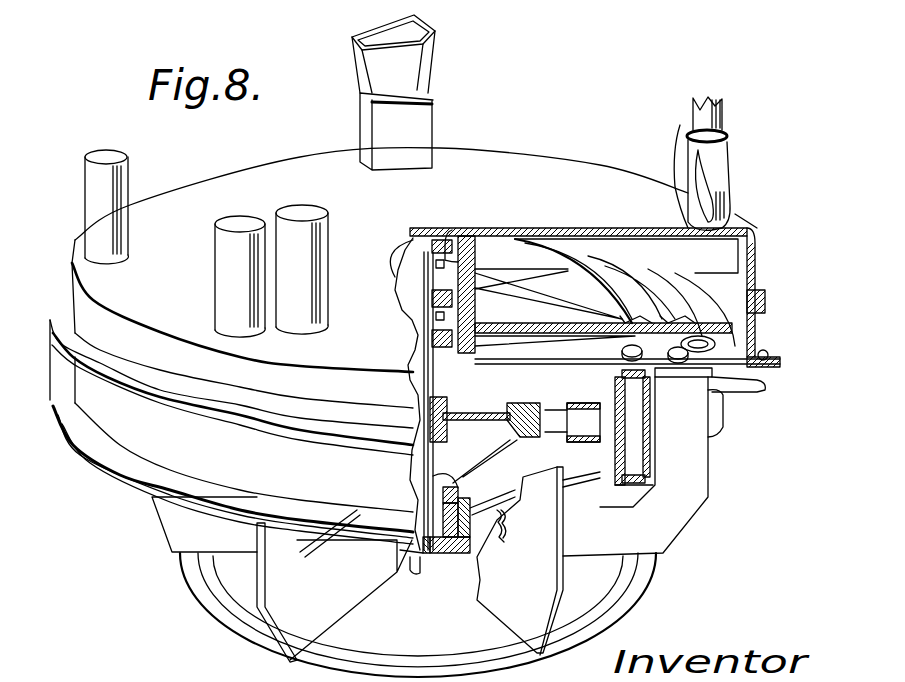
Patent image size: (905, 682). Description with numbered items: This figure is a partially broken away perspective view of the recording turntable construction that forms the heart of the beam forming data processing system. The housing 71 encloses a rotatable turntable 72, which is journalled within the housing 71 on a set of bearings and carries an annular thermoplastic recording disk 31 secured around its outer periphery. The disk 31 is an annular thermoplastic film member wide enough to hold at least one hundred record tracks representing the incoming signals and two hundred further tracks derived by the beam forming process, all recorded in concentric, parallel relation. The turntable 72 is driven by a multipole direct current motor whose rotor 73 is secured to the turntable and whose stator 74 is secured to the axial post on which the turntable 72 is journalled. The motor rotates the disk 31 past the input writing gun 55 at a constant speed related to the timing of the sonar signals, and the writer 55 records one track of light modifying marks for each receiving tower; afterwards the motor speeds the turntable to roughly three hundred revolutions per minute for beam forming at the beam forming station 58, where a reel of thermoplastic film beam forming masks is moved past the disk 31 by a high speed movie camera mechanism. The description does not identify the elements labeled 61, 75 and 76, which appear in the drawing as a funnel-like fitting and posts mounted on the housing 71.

The rotatable thermoplastic recording disk 31 is at (708, 318).
The input writing gun 55 is at (98, 187).
The beam forming station 58 is at (727, 145).
The funnel box 61 is at (422, 118).
The housing 71 is at (525, 157).
The rotatable turntable 72 is at (498, 235).
The rotor 73 is at (562, 420).
The stator 74 is at (515, 408).
The post 75 is at (228, 265).
The post 76 is at (325, 230).